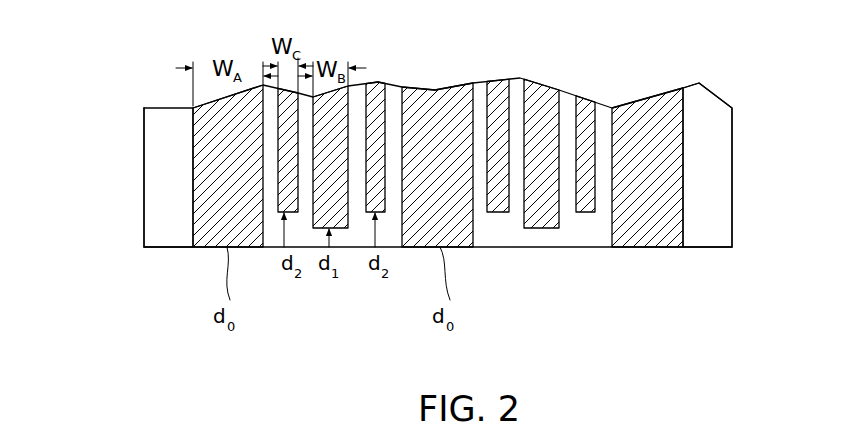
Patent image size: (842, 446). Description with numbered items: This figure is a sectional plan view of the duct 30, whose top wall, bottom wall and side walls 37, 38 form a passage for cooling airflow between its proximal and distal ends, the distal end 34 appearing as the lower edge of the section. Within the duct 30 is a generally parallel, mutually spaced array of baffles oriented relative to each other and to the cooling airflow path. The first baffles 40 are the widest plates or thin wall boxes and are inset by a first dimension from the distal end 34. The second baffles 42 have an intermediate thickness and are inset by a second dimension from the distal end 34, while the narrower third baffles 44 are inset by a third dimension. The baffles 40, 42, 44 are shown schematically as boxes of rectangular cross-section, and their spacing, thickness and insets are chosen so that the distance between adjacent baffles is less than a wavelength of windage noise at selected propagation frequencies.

The duct 30 is at (739, 211).
The distal end 34 is at (576, 251).
The side wall 37 is at (144, 157).
The side wall 38 is at (732, 143).
The first baffles 40 is at (213, 223).
The second baffles 42 is at (348, 224).
The third baffles 44 is at (279, 207).